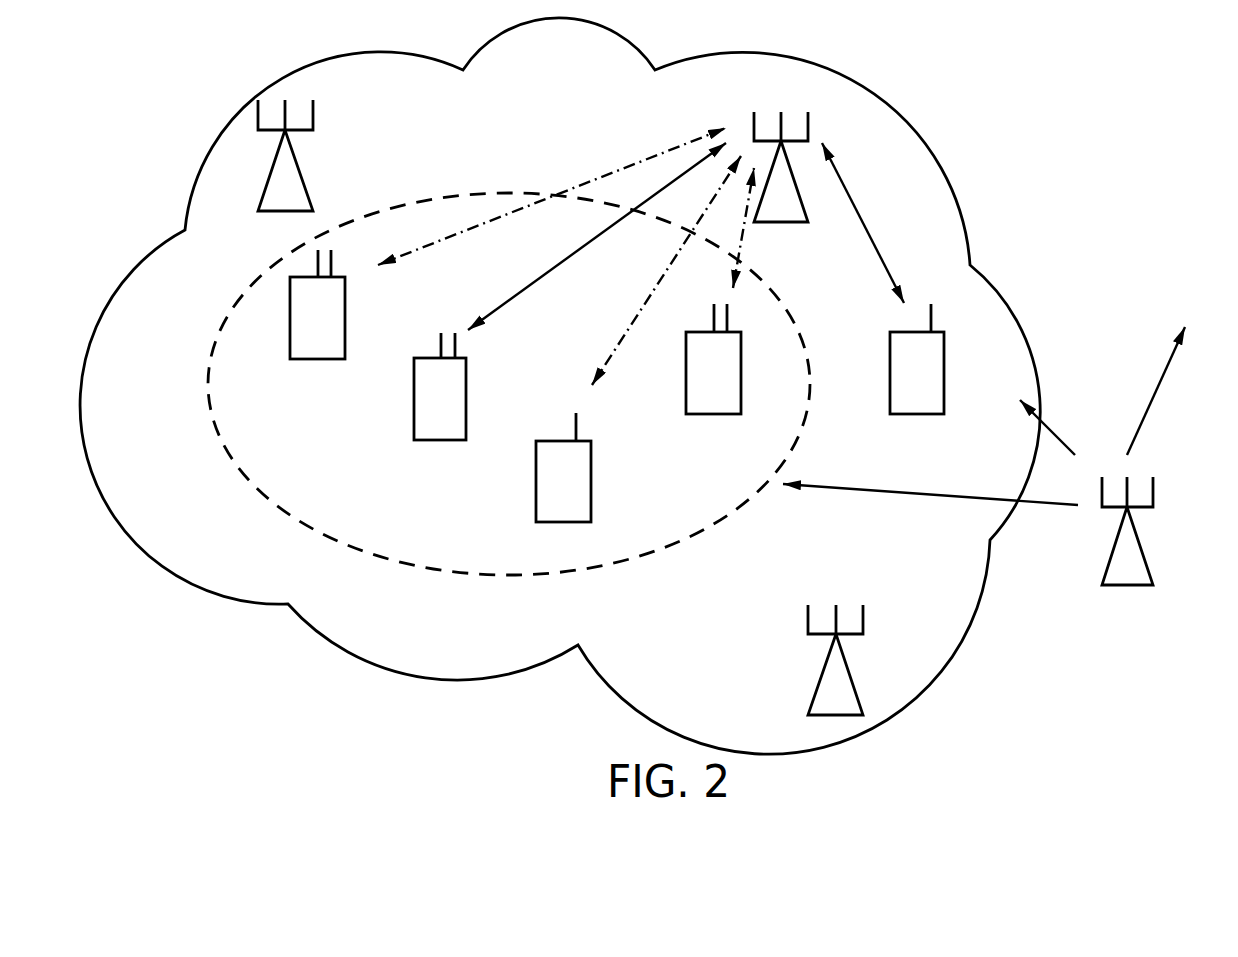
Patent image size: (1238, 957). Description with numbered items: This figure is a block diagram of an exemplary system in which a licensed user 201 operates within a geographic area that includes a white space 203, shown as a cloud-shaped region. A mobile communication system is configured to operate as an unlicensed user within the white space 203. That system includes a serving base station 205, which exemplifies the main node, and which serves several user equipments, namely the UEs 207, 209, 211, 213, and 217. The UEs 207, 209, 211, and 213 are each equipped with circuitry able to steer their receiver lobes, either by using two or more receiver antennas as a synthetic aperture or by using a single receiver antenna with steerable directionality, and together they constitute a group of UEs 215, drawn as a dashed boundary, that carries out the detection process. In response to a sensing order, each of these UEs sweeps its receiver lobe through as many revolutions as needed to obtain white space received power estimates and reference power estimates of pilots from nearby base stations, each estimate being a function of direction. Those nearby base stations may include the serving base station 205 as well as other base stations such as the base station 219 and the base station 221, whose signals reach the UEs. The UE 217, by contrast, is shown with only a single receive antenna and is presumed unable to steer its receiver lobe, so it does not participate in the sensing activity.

The licensed user (LU) 201 is at (1104, 575).
The white space 203 is at (1160, 205).
The serving base station 205 is at (793, 223).
The UE 207 is at (414, 413).
The UE 209 is at (345, 330).
The UE 211 is at (687, 407).
The UE 213 is at (538, 517).
The group of UEs 215 is at (657, 557).
The UE 217 is at (890, 385).
The base station 219 is at (297, 162).
The base station 221 is at (850, 667).